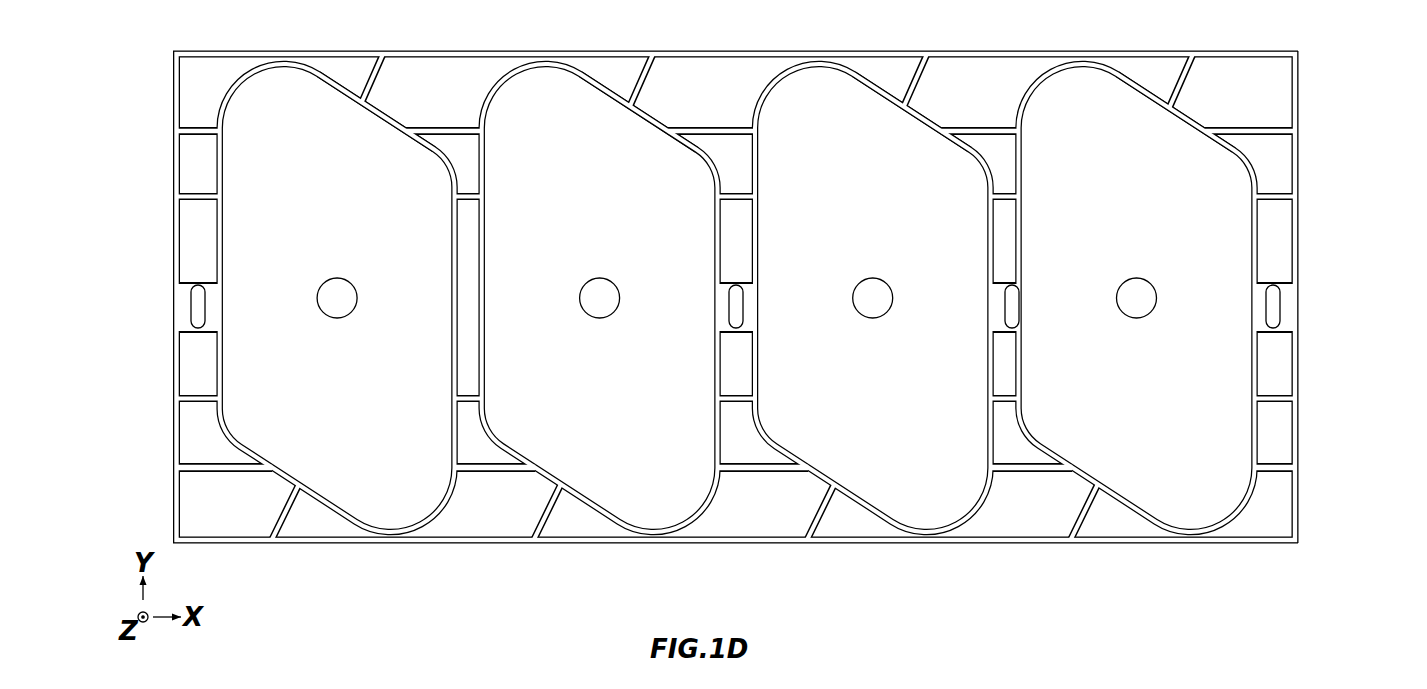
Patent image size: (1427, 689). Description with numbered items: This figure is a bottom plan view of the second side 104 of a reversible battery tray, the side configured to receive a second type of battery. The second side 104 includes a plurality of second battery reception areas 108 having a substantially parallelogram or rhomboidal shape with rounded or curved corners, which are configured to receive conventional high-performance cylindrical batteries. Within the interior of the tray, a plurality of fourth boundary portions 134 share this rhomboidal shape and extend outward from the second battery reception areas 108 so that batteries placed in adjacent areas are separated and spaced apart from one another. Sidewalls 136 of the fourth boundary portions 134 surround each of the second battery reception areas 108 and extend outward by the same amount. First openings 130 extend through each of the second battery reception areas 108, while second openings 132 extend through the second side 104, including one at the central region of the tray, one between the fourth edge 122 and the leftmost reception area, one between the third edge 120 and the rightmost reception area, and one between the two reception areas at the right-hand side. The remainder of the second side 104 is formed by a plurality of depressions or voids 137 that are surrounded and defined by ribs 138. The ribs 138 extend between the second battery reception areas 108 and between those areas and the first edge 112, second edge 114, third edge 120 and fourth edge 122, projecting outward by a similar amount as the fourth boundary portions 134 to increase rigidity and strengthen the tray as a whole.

The second side 104 is at (740, 306).
The second battery reception areas 108 is at (394, 212).
The first edge 112 is at (617, 548).
The second edge 114 is at (821, 46).
The third edge 120 is at (1303, 197).
The fourth edge 122 is at (170, 208).
The first openings 130 is at (351, 311).
The second openings 132 is at (189, 304).
The fourth boundary portions 134 is at (381, 108).
The sidewalls 136 is at (229, 246).
The depressions or voids 137 is at (743, 443).
The ribs 138 is at (917, 73).